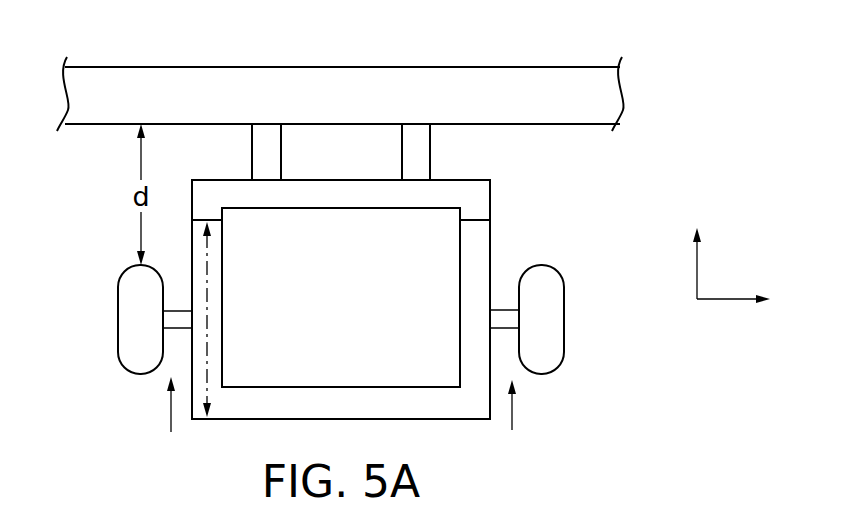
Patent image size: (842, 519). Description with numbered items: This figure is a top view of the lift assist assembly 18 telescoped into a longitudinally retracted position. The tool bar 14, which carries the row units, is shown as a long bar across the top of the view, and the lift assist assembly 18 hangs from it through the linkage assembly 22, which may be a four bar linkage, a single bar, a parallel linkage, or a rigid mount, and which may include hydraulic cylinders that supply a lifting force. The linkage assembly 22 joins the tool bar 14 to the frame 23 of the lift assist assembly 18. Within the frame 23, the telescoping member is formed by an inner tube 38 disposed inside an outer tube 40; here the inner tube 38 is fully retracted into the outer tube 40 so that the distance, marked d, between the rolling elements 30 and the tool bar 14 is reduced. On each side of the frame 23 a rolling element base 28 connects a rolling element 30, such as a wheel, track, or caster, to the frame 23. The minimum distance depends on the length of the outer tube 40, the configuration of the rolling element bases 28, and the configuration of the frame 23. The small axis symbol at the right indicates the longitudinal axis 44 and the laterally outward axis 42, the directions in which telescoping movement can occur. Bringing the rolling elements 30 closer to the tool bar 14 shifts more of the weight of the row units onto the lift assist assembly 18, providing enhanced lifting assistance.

The tool bar 14 is at (513, 86).
The linkage assembly 22 is at (402, 152).
The lift assist assembly 18 is at (514, 198).
The inner tube 38 is at (192, 195).
The frame 23 is at (340, 387).
The outer tube 40 is at (222, 419).
The rolling element 30 is at (118, 320).
The rolling element base 28 is at (110, 392).
The longitudinal axis 44 is at (697, 268).
The laterally outward axis 42 is at (727, 299).